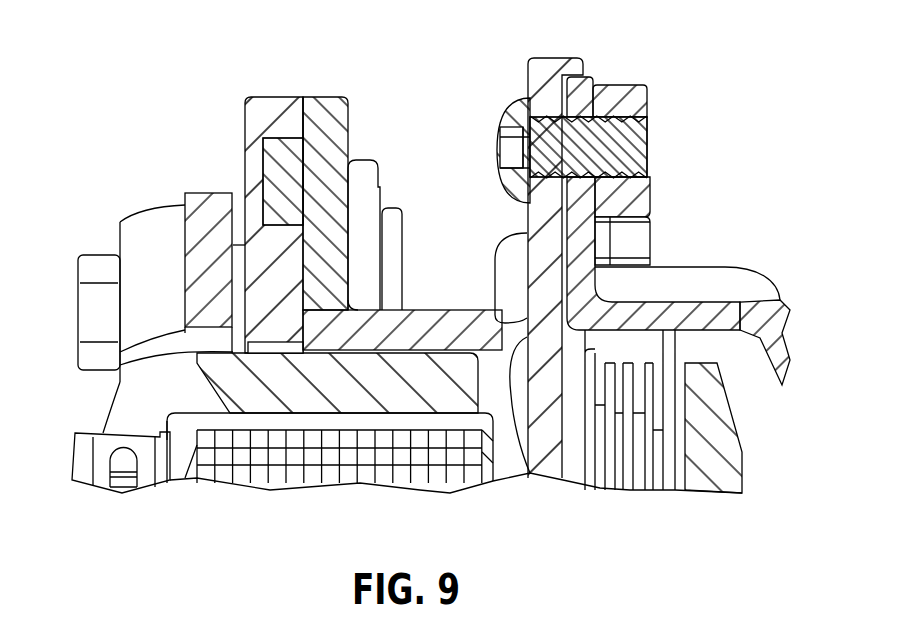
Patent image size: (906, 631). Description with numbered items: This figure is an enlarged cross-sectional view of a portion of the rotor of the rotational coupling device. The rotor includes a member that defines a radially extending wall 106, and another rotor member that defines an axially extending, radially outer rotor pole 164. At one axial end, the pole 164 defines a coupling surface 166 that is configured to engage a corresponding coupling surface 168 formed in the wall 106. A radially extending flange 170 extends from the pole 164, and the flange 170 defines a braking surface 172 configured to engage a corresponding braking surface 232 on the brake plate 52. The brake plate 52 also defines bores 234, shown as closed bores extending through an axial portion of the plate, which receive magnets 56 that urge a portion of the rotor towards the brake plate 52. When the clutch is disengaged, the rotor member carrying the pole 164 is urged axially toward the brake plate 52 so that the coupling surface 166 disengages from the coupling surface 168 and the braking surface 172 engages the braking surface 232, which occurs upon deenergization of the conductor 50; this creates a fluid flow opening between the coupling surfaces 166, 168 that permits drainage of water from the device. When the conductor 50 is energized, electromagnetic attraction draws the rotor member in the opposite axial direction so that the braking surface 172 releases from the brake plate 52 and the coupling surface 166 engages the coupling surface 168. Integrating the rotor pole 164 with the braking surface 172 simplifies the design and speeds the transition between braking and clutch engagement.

The conductor 50 is at (267, 468).
The brake plate 52 is at (258, 112).
The magnet 56 is at (277, 157).
The radially extending wall 106 is at (580, 250).
The rotor pole 164 is at (425, 330).
The coupling surface 166 is at (522, 270).
The coupling surface 168 is at (532, 412).
The flange 170 is at (327, 125).
The braking surface 172 is at (305, 100).
The braking surface 232 is at (302, 192).
The bore 234 is at (283, 225).